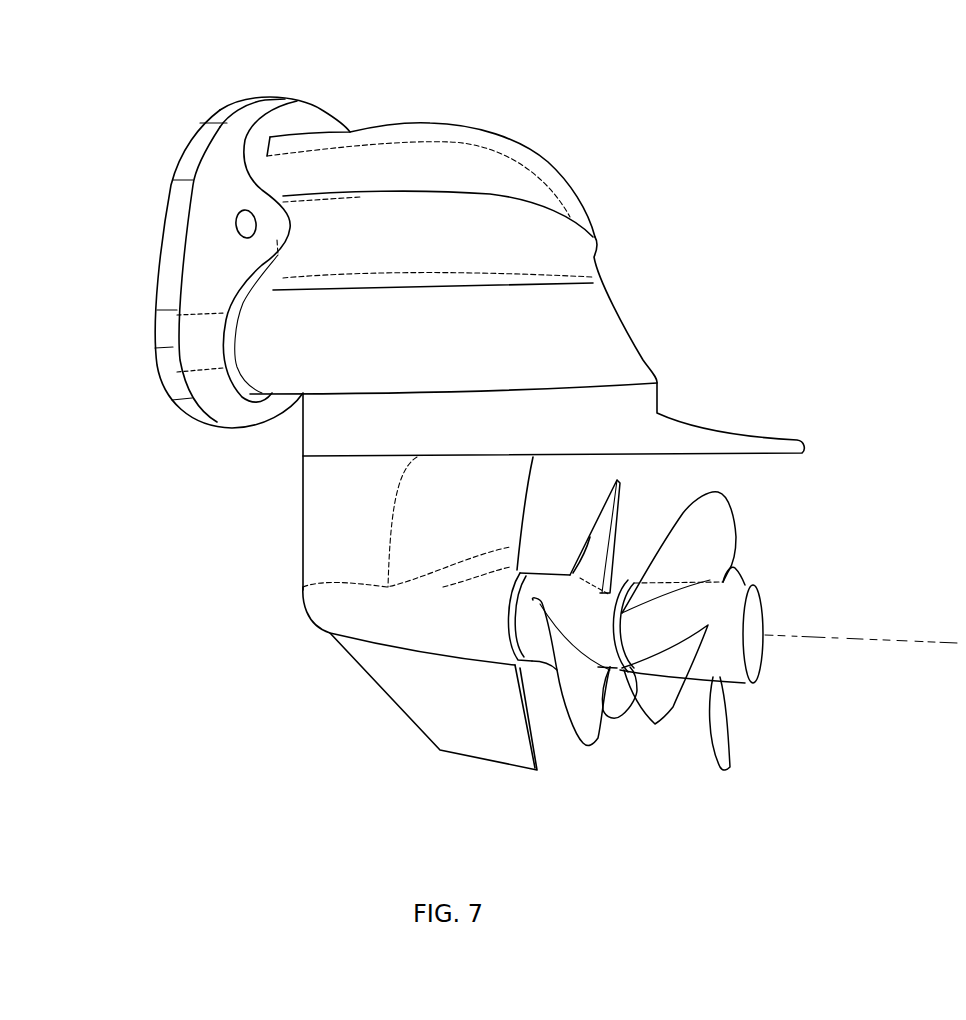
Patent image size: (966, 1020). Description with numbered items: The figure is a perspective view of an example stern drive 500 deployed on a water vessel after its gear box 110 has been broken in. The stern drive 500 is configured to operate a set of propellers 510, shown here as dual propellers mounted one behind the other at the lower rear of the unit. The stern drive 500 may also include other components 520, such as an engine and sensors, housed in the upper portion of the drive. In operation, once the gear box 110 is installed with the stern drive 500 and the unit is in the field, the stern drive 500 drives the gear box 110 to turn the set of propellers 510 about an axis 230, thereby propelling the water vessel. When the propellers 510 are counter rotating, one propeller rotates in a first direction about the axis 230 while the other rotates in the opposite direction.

The stern drive 500 is at (556, 425).
The other components 520 is at (638, 170).
The gear box 110 is at (217, 652).
The set of propellers 510 is at (609, 663).
The axis 230 is at (839, 637).